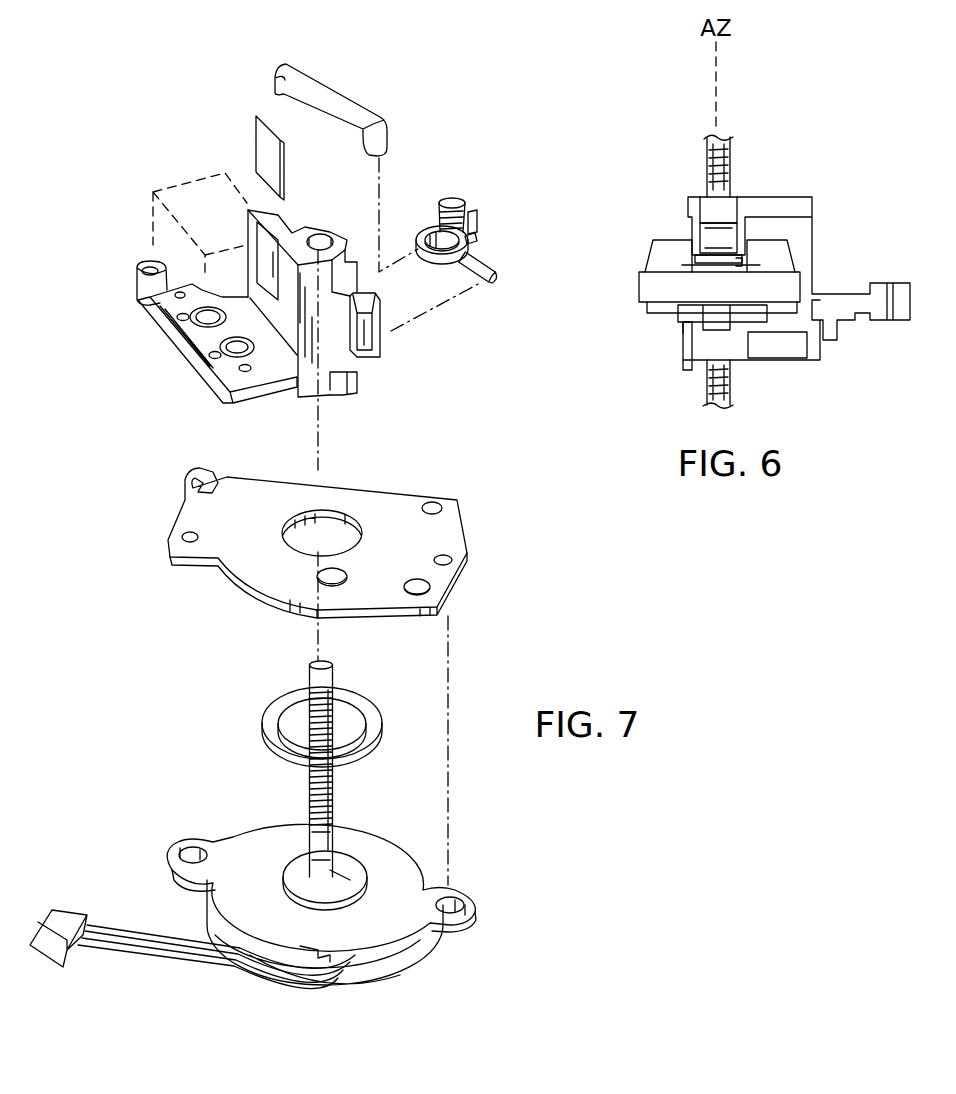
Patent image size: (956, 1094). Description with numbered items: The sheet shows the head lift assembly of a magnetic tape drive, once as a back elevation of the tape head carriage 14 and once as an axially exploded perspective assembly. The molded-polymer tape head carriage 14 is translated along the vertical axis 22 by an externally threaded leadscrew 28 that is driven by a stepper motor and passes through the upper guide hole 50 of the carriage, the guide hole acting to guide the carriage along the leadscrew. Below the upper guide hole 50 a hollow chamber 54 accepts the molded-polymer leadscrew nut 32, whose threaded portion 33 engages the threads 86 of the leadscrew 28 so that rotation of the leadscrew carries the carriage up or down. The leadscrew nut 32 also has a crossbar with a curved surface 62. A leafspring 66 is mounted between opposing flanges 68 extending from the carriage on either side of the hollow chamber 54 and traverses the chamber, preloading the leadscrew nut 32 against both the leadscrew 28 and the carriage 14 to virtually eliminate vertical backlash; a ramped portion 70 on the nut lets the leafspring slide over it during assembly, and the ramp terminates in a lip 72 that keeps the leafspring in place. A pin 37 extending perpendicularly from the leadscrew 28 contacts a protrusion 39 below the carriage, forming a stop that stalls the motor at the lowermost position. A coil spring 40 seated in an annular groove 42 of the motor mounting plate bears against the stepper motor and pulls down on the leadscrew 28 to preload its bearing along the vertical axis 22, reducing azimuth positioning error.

In FIG. 7, the tape head carriage 14 is at (287, 310).
In FIG. 6, the tape head carriage 14 is at (807, 220).
In FIG. 7, the vertical axis 22 is at (320, 622).
In FIG. 6, the vertical axis 22 is at (729, 152).
In FIG. 7, the leadscrew 28 is at (323, 855).
In FIG. 6, the leadscrew 28 is at (712, 153).
In FIG. 7, the leadscrew nut 32 is at (470, 242).
In FIG. 6, the leadscrew nut 32 is at (718, 312).
In FIG. 7, the threaded portion 33 is at (442, 223).
In FIG. 7, the pin 37 is at (365, 857).
In FIG. 7, the protrusion 39 is at (353, 382).
In FIG. 7, the coil spring 40 is at (340, 533).
In FIG. 7, the annular groove 42 is at (420, 589).
In FIG. 7, the upper guide hole 50 is at (320, 240).
In FIG. 6, the upper guide hole 50 is at (710, 200).
In FIG. 6, the hollow chamber 54 is at (722, 233).
In FIG. 7, the curved surface 62 is at (486, 286).
In FIG. 7, the leafspring 66 is at (335, 103).
In FIG. 6, the leafspring 66 is at (655, 287).
In FIG. 7, the flanges 68 is at (383, 331).
In FIG. 6, the flanges 68 is at (795, 252).
In FIG. 7, the ramped portion 70 is at (472, 230).
In FIG. 6, the ramped portion 70 is at (723, 252).
In FIG. 7, the lip 72 is at (488, 235).
In FIG. 6, the lip 72 is at (742, 263).
In FIG. 7, the threads 86 is at (340, 783).
In FIG. 6, the threads 86 is at (732, 377).